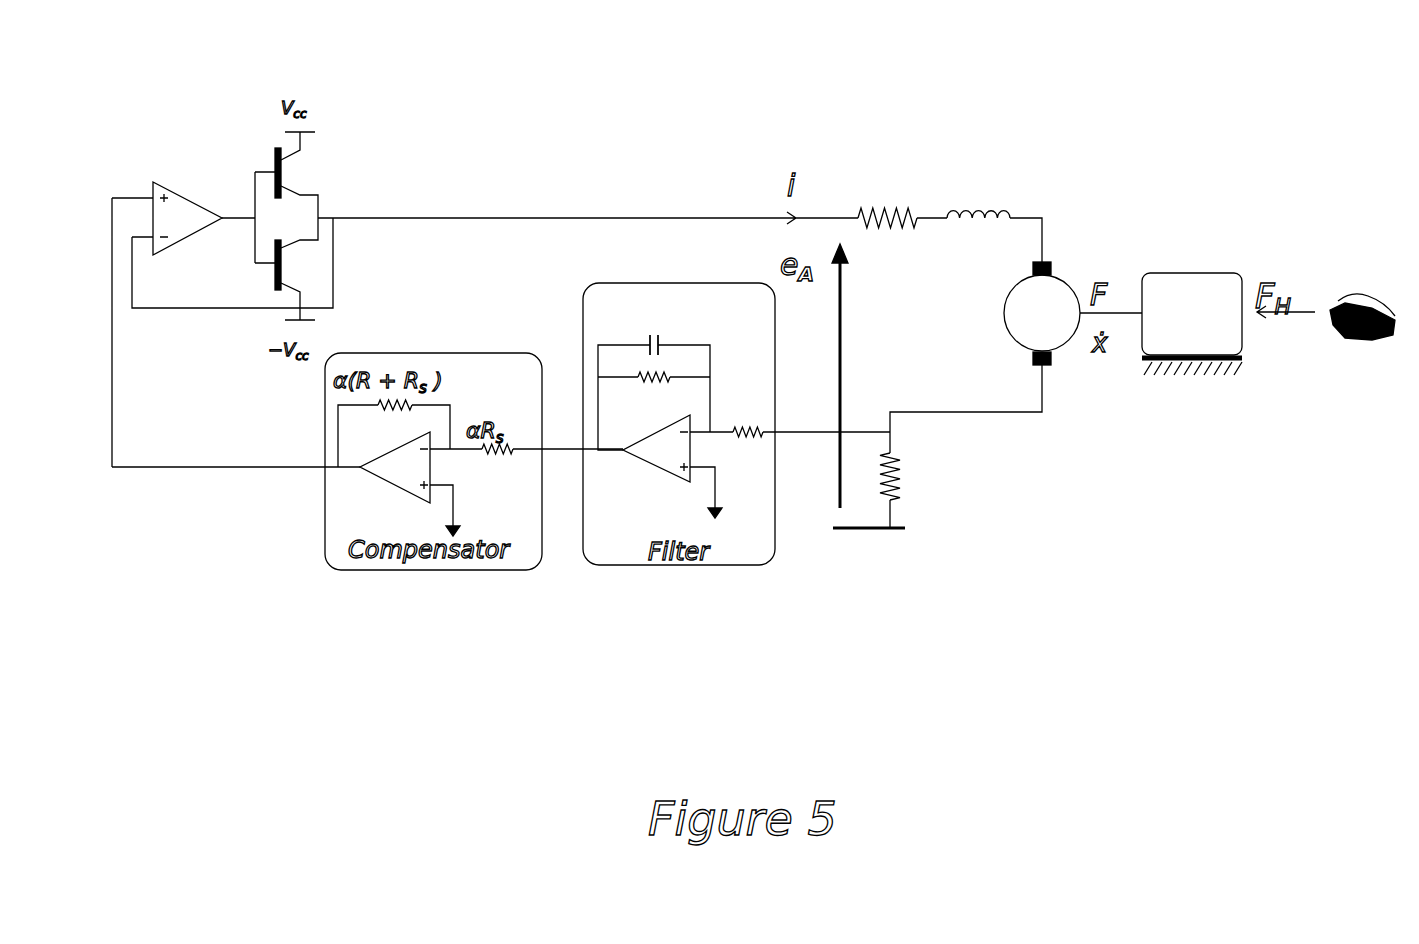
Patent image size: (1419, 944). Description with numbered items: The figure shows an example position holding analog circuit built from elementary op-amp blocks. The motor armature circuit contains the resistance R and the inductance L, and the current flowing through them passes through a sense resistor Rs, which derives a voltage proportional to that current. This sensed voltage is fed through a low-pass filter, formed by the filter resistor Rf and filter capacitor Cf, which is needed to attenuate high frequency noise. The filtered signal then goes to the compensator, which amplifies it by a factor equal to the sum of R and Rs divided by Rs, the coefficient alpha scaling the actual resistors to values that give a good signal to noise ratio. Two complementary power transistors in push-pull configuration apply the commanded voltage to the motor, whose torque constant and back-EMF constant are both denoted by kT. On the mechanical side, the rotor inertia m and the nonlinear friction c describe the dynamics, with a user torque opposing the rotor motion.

The armature resistance R is at (887, 198).
The armature inductance L is at (978, 193).
The torque constant kT is at (1042, 313).
The sense resistor Rs is at (908, 476).
The filter capacitor Cf is at (648, 330).
The filter resistor Rf is at (699, 404).
The rotor inertia m is at (1192, 314).
The friction c is at (1202, 386).